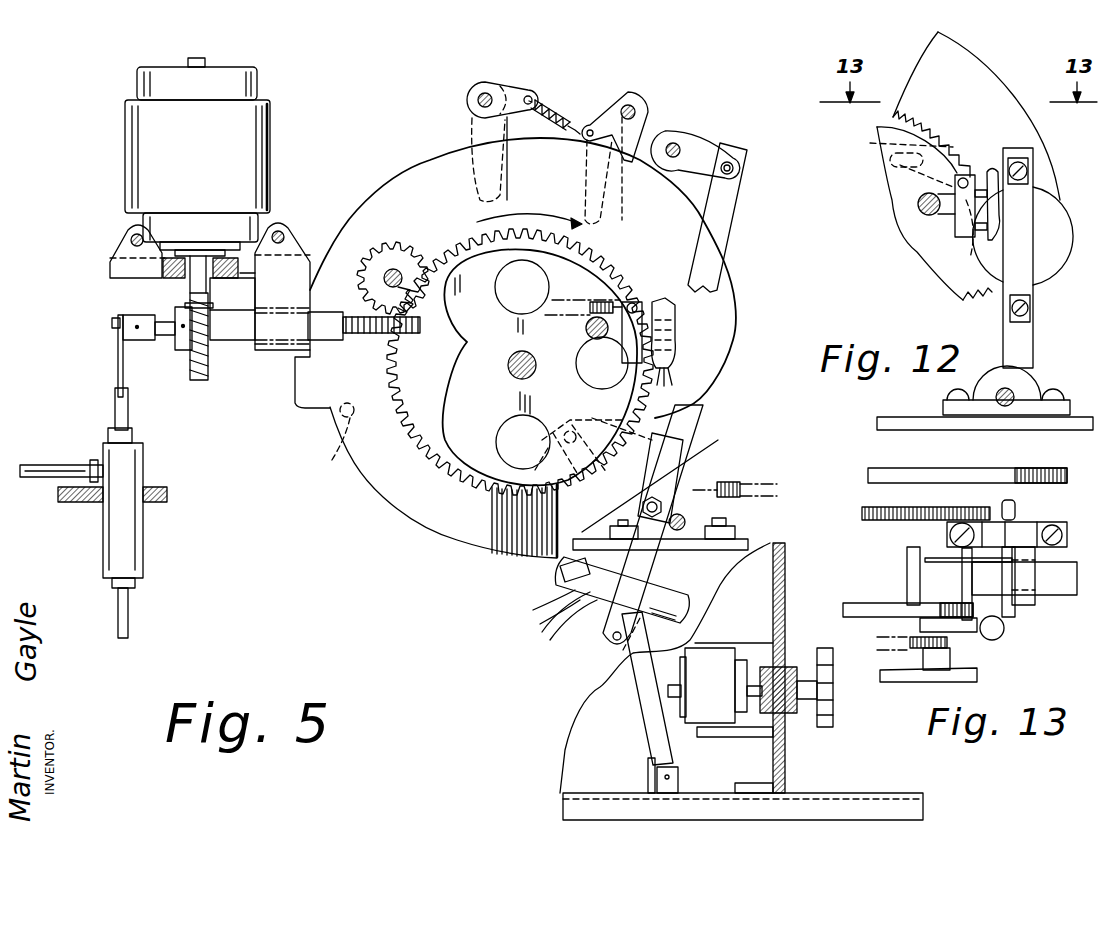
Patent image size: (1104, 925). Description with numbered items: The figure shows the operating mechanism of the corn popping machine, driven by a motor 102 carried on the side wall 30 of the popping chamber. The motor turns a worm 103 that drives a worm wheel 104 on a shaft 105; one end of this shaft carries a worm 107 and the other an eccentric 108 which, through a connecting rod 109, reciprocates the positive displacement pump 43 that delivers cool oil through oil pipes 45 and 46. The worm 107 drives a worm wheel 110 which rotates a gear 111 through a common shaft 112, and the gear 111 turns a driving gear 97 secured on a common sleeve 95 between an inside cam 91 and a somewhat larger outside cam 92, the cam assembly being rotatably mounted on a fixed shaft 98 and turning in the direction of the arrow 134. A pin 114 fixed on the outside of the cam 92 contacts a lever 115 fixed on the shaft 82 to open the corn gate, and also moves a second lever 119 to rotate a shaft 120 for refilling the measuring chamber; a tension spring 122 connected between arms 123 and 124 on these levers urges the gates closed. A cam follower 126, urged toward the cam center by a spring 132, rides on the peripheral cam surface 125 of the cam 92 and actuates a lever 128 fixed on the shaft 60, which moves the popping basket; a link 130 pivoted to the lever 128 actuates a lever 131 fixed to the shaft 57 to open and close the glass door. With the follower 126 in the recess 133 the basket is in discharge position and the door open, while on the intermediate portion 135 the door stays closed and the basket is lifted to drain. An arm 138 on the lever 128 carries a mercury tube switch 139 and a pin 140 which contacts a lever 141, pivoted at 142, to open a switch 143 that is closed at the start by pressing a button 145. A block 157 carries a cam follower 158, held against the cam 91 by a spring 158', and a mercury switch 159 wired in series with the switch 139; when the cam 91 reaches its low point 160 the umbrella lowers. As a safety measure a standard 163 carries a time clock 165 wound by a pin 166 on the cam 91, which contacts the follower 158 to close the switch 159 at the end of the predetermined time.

In FIG. 5, the motor 102 is at (272, 122).
In FIG. 5, the worm 103 is at (188, 300).
In FIG. 5, the worm wheel 104 is at (200, 381).
In FIG. 5, the shaft 105 is at (230, 322).
In FIG. 5, the worm 107 is at (352, 341).
In FIG. 5, the eccentric 108 is at (133, 341).
In FIG. 5, the connecting rod 109 is at (117, 355).
In FIG. 5, the worm wheel 110 is at (372, 258).
In FIG. 5, the gear 111 is at (411, 292).
In FIG. 5, the common shaft 112 is at (384, 281).
In FIG. 5, the pin 114 is at (340, 462).
In FIG. 5, the lever 115 is at (488, 130).
In FIG. 5, the second lever 119 is at (618, 180).
In FIG. 5, the shaft 120 is at (635, 107).
In FIG. 5, the tension spring 122 is at (560, 95).
In FIG. 5, the arm 123 is at (512, 84).
In FIG. 5, the arm 124 is at (598, 120).
In FIG. 5, the cam surface 125 is at (736, 305).
In FIG. 5, the cam follower 126 is at (577, 413).
In FIG. 5, the lever 128 is at (640, 502).
In FIG. 5, the link 130 is at (720, 222).
In FIG. 5, the lever 131 is at (705, 148).
In FIG. 5, the spring 132 is at (729, 482).
In FIG. 5, the recess 133 is at (602, 398).
In FIG. 5, the arrow 134 is at (545, 215).
In FIG. 5, the intermediate portion 135 is at (383, 503).
In FIG. 5, the arm 138 is at (666, 581).
In FIG. 5, the mercury tube switch 139 is at (563, 577).
In FIG. 5, the pin 140 is at (610, 641).
In FIG. 5, the lever 141 is at (650, 712).
In FIG. 5, the pivot 142 is at (678, 778).
In FIG. 5, the switch 143 is at (712, 648).
In FIG. 5, the button 145 is at (826, 728).
In FIG. 5, the block 157 is at (622, 352).
In FIG. 12, the block 157 is at (955, 225).
In FIG. 13, the block 157 is at (920, 626).
In FIG. 5, the cam follower 158 is at (613, 309).
In FIG. 12, the cam follower 158 is at (981, 189).
In FIG. 13, the cam follower 158 is at (968, 584).
In FIG. 13, the spring 158' is at (901, 655).
In FIG. 5, the mercury switch 159 is at (676, 303).
In FIG. 12, the mercury switch 159 is at (996, 242).
In FIG. 13, the mercury switch 159 is at (1004, 630).
In FIG. 5, the low point 160 is at (468, 342).
In FIG. 12, the standard 163 is at (1062, 285).
In FIG. 12, the time clock 165 is at (1060, 232).
In FIG. 13, the time clock 165 is at (1045, 590).
In FIG. 5, the pin 166 is at (592, 287).
In FIG. 12, the pin 166 is at (878, 147).
In FIG. 13, the pin 166 is at (907, 560).
In FIG. 13, the side wall 30 is at (965, 675).
In FIG. 5, the positive displacement pump 43 is at (125, 545).
In FIG. 5, the oil pipe 45 is at (130, 615).
In FIG. 5, the oil pipe 46 is at (47, 468).
In FIG. 5, the shaft 57 is at (679, 146).
In FIG. 5, the shaft 60 is at (675, 528).
In FIG. 12, the shaft 60 is at (1005, 406).
In FIG. 13, the shaft 60 is at (1015, 509).
In FIG. 5, the shaft 82 is at (478, 84).
In FIG. 5, the cam 91 is at (460, 403).
In FIG. 12, the cam 91 is at (917, 253).
In FIG. 13, the cam 91 is at (885, 603).
In FIG. 5, the cam 92 is at (453, 528).
In FIG. 12, the cam 92 is at (995, 73).
In FIG. 13, the cam 92 is at (925, 470).
In FIG. 5, the common sleeve 95 is at (508, 366).
In FIG. 5, the driving gear 97 is at (600, 264).
In FIG. 12, the driving gear 97 is at (953, 148).
In FIG. 13, the driving gear 97 is at (930, 508).
In FIG. 5, the fixed shaft 98 is at (585, 328).